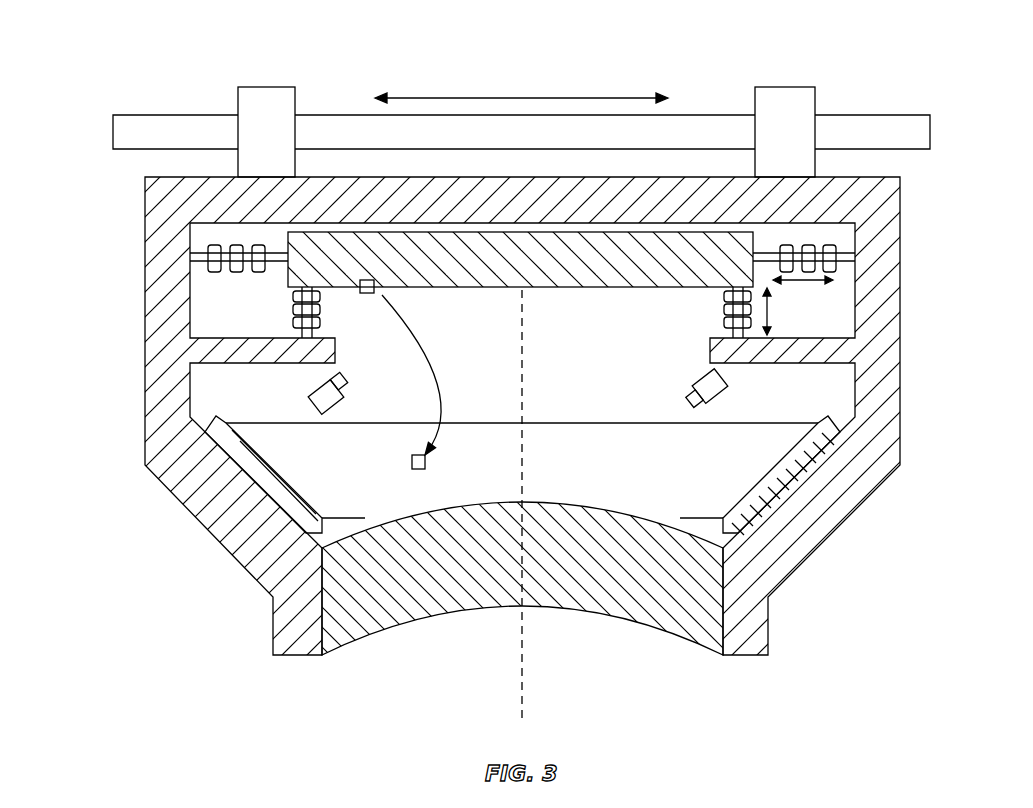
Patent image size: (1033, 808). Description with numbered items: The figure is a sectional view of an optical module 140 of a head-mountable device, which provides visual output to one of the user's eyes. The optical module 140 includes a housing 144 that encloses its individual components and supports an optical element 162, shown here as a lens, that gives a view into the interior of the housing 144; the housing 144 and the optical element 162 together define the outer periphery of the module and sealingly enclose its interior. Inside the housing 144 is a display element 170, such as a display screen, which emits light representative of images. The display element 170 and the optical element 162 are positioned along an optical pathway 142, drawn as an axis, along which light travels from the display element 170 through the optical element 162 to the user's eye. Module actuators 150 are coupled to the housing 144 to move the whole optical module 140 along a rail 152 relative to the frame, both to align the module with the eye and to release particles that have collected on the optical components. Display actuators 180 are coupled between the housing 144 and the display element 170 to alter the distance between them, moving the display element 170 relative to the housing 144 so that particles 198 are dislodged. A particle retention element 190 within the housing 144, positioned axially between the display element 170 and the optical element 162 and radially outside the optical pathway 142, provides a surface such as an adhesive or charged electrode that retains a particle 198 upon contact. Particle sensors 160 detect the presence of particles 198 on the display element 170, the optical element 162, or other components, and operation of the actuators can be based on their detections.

The optical module 140 is at (130, 20).
The optical pathway 142 is at (520, 668).
The housing 144 is at (890, 288).
The module actuator 150 is at (264, 87).
The rail 152 is at (888, 115).
The particle sensor 160 is at (312, 392).
The optical element 162 is at (608, 600).
The display element 170 is at (593, 287).
The display actuator 180 is at (240, 273).
The particle retention element 190 is at (255, 441).
The particle 198 is at (376, 288).